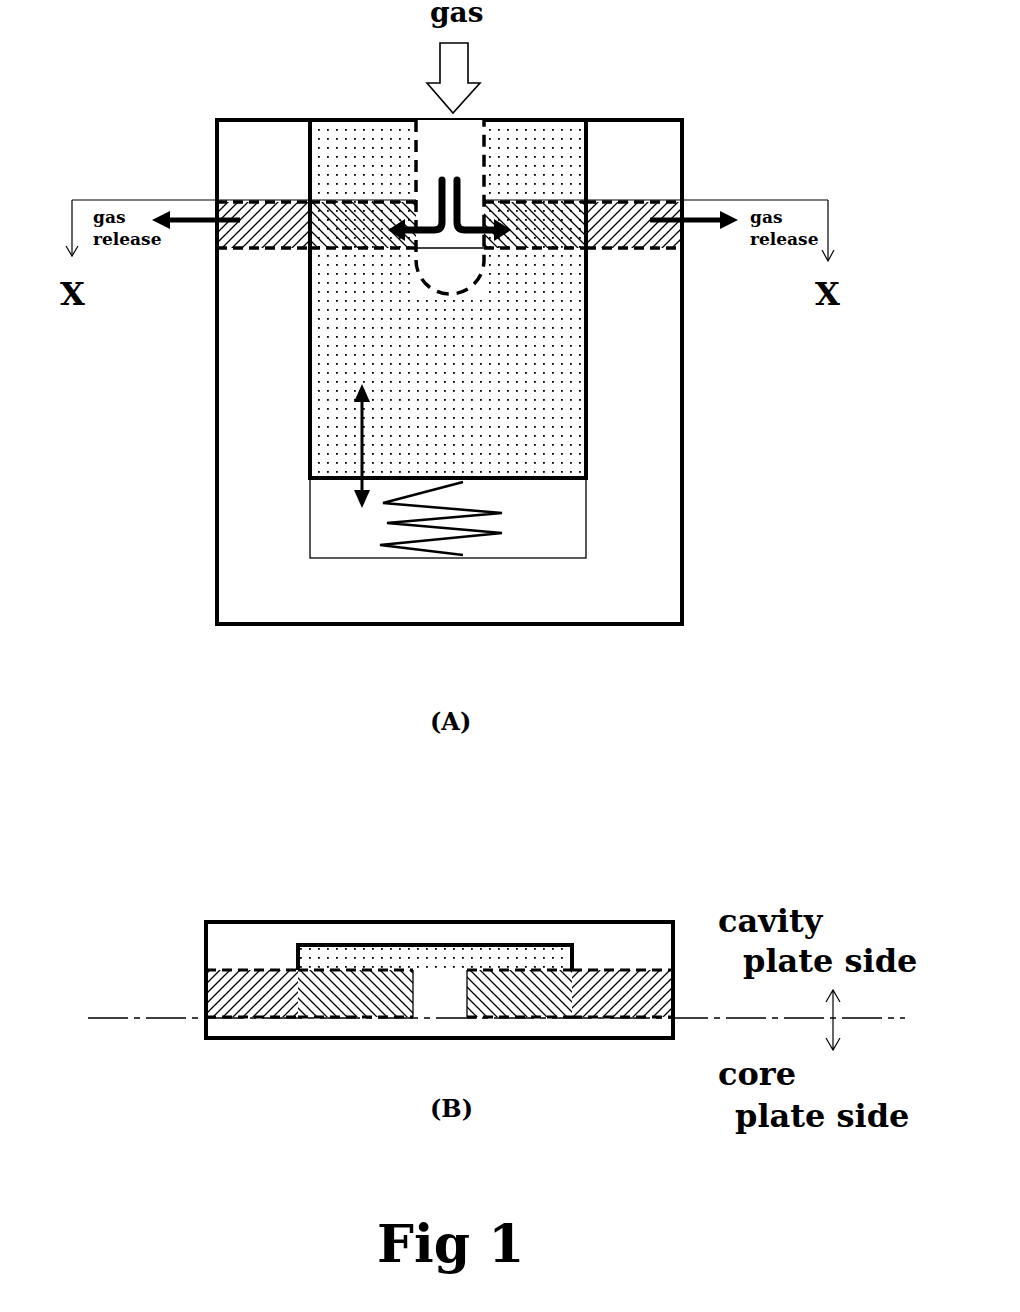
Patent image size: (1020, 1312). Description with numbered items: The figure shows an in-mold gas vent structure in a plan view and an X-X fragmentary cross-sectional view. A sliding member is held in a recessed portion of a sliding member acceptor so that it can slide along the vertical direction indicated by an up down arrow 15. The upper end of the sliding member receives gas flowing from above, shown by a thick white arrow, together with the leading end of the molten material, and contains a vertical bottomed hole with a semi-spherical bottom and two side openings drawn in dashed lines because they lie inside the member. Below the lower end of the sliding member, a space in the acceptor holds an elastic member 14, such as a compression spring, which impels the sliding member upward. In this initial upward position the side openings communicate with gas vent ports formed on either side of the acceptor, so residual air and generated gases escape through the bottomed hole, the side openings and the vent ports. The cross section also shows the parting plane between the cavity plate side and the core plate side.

The elastic member 14 is at (467, 540).
The up down arrow 15 is at (360, 440).